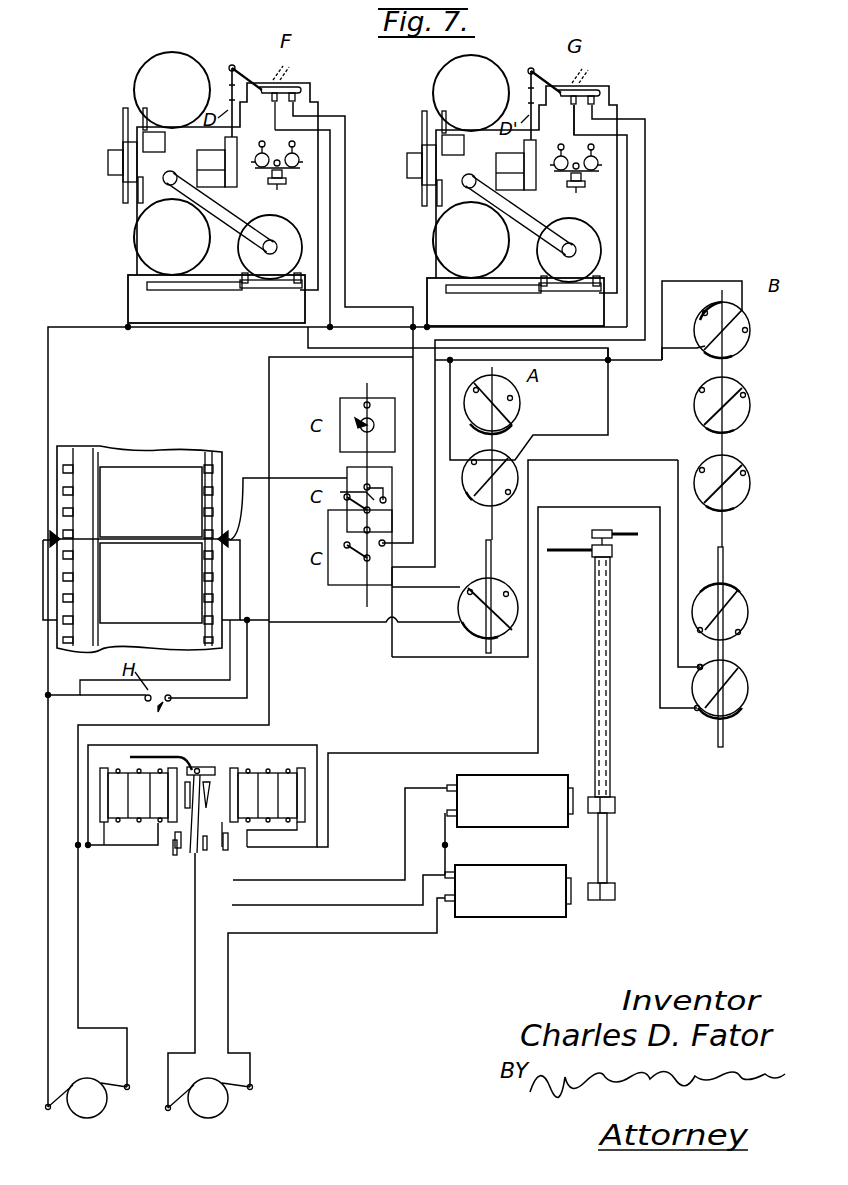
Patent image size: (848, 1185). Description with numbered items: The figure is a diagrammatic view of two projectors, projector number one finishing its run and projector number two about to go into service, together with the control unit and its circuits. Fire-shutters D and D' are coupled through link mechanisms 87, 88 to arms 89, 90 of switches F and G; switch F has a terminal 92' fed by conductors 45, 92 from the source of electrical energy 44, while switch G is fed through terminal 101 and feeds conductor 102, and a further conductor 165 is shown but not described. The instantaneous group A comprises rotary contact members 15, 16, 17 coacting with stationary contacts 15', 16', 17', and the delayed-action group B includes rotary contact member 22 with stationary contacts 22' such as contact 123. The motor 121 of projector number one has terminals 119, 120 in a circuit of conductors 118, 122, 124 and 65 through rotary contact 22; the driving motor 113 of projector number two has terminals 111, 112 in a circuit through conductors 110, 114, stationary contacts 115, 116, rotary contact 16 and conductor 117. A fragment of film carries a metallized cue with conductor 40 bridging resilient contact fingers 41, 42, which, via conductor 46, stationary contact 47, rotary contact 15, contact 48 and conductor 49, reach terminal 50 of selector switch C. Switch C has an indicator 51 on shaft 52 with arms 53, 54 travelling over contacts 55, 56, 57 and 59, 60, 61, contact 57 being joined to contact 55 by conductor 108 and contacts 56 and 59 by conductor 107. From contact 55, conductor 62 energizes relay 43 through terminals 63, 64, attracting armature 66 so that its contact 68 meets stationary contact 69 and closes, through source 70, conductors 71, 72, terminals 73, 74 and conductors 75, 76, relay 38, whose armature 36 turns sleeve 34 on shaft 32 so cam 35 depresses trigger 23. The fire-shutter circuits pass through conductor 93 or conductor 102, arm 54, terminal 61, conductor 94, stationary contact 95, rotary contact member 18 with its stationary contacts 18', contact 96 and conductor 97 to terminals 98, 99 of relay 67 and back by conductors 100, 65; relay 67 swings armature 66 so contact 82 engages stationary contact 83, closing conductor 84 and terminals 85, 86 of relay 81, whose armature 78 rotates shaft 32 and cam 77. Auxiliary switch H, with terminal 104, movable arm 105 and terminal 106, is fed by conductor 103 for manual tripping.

The link mechanism 87 is at (237, 72).
The arm of switch F 89 is at (289, 82).
The terminal of switch F 92' is at (261, 116).
The conductor 92 is at (323, 230).
The conductor 93 is at (346, 150).
The motor of projector number one 121 is at (268, 236).
The terminal of motor 121 119 is at (242, 278).
The terminal of motor 121 120 is at (301, 278).
The conductor 118 is at (128, 303).
The conductor 110 is at (498, 302).
The link mechanism 88 is at (542, 126).
The arm of switch G 90 is at (586, 82).
The terminal of switch G 101 is at (558, 120).
The conductor 102 is at (646, 141).
The conductor 165 is at (628, 188).
The driving motor of projector number two 113 is at (569, 244).
The terminal of driving motor 113 111 is at (532, 276).
The terminal of driving motor 113 112 is at (602, 274).
The conductor 122 is at (328, 349).
The stationary contact 123 is at (745, 314).
The rotary contact member 22 is at (722, 418).
The stationary contact members 22' is at (768, 338).
The conductor 45 is at (275, 329).
The conductor 65 is at (270, 401).
The indicator 51 is at (358, 430).
The shaft 52 is at (366, 458).
The conductor 108 is at (376, 475).
The conductor 62 is at (307, 480).
The contact 56 is at (369, 499).
The contact 57 is at (385, 504).
The contact 55 is at (345, 497).
The movable arm 53 is at (347, 506).
The terminal 50 is at (360, 547).
The contact 59 is at (334, 539).
The conductor 107 is at (377, 510).
The terminal 60 is at (385, 545).
The movable arm 54 is at (356, 554).
The terminal 61 is at (226, 672).
The conductor 40 is at (232, 536).
The contact finger 41 is at (44, 578).
The contact finger 42 is at (241, 580).
The conductor 46 is at (326, 623).
The stationary contact 47 is at (463, 629).
The contact 48 is at (459, 573).
The conductor 49 is at (425, 590).
The rotary contact member 15 is at (488, 596).
The stationary contact members 15' is at (508, 641).
The rotary contact member 16 is at (490, 478).
The stationary contact members 16' is at (521, 513).
The rotary contact member 17 is at (492, 453).
The stationary contact members 17' is at (532, 420).
The conductor 117 is at (480, 432).
The stationary contact 116 is at (464, 477).
The stationary contact 115 is at (516, 459).
The conductor 114 is at (609, 406).
The conductor 124 is at (561, 362).
The conductor 94 is at (672, 462).
The cam 77 is at (613, 532).
The trigger 23 is at (614, 548).
The cam 35 is at (610, 558).
The stationary contact 95 is at (698, 666).
The rotary contact member 18 is at (720, 689).
The stationary contact members 18' is at (764, 695).
The stationary contact 96 is at (696, 711).
The conductor 97 is at (329, 800).
The sleeve 34 is at (611, 749).
The armature 36 is at (616, 804).
The shaft 32 is at (608, 860).
The armature 78 is at (616, 892).
The relay 38 is at (538, 787).
The terminal of relay 38 73 is at (445, 792).
The terminal of relay 38 74 is at (445, 814).
The conductor 75 is at (447, 838).
The relay 81 is at (514, 912).
The terminal of relay 81 86 is at (440, 879).
The terminal of relay 81 85 is at (440, 901).
The conductor 84 is at (316, 906).
The conductor 76 is at (229, 1012).
The conductor 72 is at (336, 881).
The conductor 71 is at (195, 984).
The source of electrical energy 70 is at (206, 1086).
The source of electrical energy 44 is at (86, 1086).
The relay 43 is at (137, 786).
The relay terminal 63 is at (106, 830).
The relay terminal 64 is at (165, 843).
The stationary contact 69 is at (177, 860).
The contact 68 is at (183, 862).
The stationary contact 83 is at (216, 859).
The contact 82 is at (210, 837).
The armature 66 is at (199, 828).
The relay 67 is at (258, 773).
The terminal of relay 67 99 is at (293, 832).
The terminal of relay 67 98 is at (226, 848).
The conductor 100 is at (270, 747).
The conductor 103 is at (106, 698).
The terminal of switch H 104 is at (115, 693).
The movable arm of switch H 105 is at (160, 706).
The terminal of switch H 106 is at (171, 698).